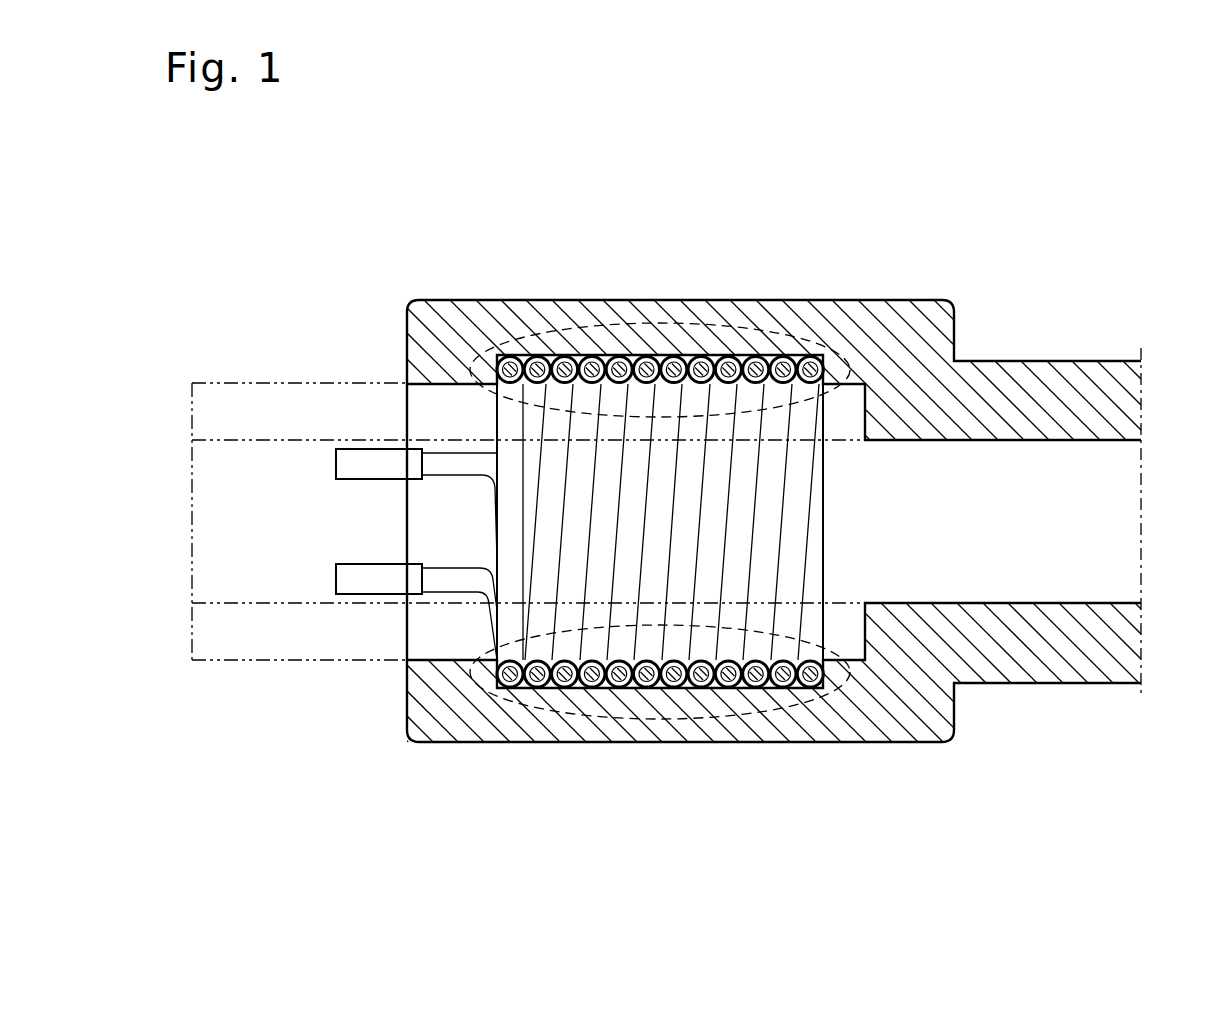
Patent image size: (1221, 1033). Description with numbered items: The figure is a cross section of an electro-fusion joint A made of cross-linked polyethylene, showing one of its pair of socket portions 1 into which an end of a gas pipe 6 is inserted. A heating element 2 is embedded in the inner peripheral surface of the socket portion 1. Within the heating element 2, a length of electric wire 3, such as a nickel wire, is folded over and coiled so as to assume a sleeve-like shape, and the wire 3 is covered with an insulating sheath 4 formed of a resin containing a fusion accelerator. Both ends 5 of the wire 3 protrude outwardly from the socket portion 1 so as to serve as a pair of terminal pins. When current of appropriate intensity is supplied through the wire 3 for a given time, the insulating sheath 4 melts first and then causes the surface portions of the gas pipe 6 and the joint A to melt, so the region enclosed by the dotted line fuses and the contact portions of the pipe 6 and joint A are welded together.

The electro-fusion joint A is at (906, 298).
The socket portion 1 is at (763, 727).
The heating element 2 is at (846, 497).
The electric wire 3 is at (645, 355).
The insulating sheath 4 is at (653, 358).
The ends of the wire 5 is at (340, 583).
The gas pipe 6 is at (287, 661).